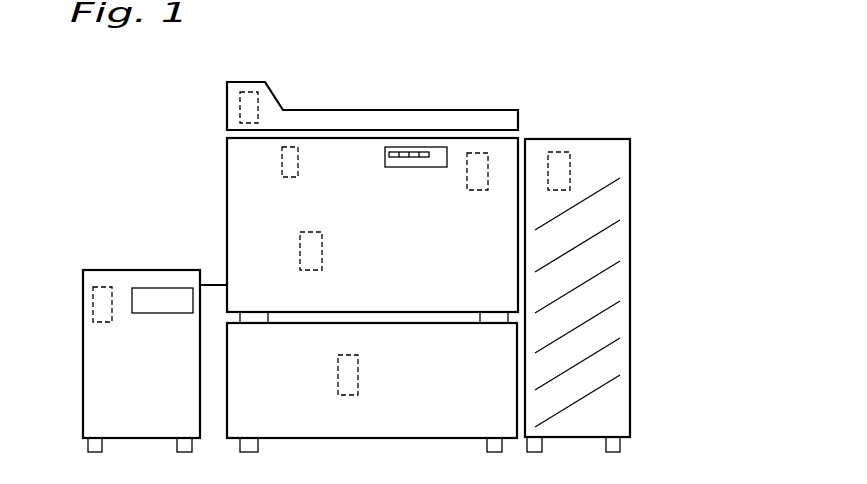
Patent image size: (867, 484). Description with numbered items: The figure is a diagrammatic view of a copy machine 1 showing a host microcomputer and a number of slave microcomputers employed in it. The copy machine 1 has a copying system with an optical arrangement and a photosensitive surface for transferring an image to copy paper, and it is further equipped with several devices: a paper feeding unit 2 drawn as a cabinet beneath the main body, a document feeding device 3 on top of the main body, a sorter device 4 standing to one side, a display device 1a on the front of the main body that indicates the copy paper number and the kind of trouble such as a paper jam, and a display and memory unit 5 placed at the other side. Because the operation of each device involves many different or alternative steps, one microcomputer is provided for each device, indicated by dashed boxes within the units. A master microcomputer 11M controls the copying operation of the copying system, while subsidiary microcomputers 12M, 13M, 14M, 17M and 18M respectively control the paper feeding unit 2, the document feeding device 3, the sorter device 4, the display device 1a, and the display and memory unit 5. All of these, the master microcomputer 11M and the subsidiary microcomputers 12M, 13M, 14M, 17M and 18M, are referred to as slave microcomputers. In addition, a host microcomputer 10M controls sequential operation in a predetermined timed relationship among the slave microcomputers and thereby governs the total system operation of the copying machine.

The copy machine 1 is at (243, 181).
The display device 1a is at (409, 168).
The paper feeding unit 2 is at (280, 413).
The document feeding device 3 is at (378, 112).
The sorter device 4 is at (630, 250).
The display and memory unit 5 is at (88, 415).
The host microcomputer 10M is at (477, 150).
The master microcomputer 11M is at (300, 247).
The subsidiary microcomputer 12M is at (347, 395).
The subsidiary microcomputer 13M is at (252, 83).
The subsidiary microcomputer 14M is at (563, 148).
The subsidiary microcomputer 17M is at (282, 154).
The subsidiary microcomputer 18M is at (96, 289).